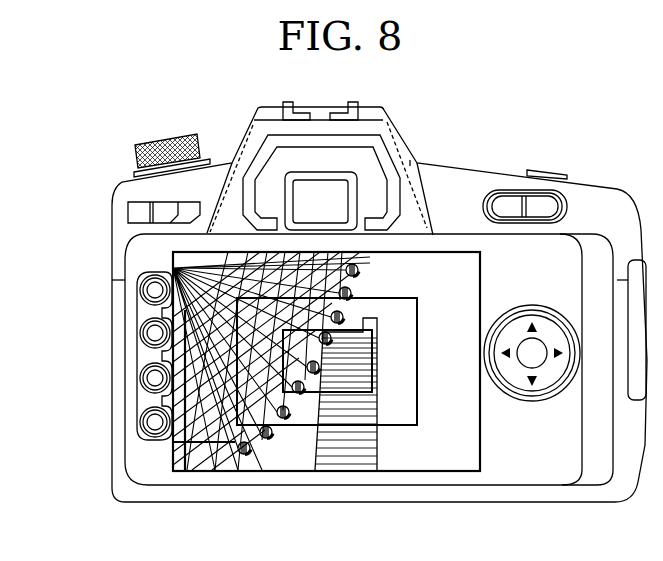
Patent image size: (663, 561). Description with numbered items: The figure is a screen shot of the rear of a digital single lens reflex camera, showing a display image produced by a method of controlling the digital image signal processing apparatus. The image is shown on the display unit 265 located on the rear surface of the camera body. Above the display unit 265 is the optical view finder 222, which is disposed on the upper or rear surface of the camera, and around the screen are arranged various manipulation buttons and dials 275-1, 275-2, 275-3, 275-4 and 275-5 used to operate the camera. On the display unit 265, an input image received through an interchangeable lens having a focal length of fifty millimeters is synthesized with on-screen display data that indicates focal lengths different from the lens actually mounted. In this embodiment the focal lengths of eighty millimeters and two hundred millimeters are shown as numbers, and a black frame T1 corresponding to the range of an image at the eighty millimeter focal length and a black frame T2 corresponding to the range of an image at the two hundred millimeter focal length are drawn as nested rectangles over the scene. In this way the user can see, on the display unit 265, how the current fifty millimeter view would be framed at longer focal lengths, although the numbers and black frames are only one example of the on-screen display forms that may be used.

The optical view finder 222 is at (318, 188).
The display unit 265 is at (285, 460).
The manipulation button 275-1 is at (128, 210).
The manipulation button 275-2 is at (551, 170).
The manipulation buttons 275-3 is at (140, 418).
The manipulation button 275-4 is at (532, 401).
The manipulation dial 275-5 is at (166, 138).
The black frame T1 is at (350, 393).
The black frame T2 is at (402, 427).